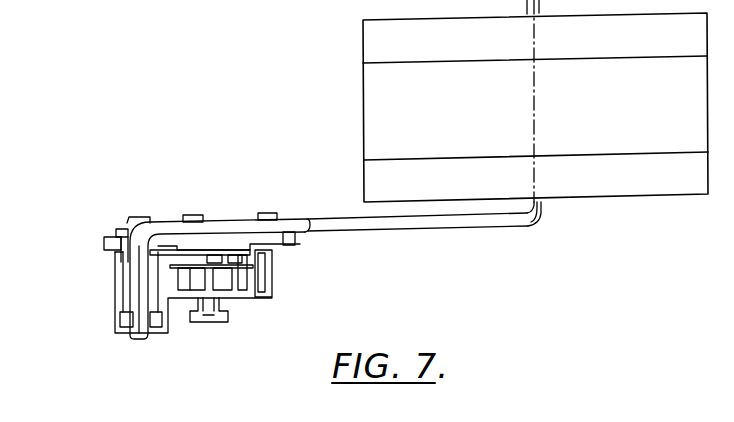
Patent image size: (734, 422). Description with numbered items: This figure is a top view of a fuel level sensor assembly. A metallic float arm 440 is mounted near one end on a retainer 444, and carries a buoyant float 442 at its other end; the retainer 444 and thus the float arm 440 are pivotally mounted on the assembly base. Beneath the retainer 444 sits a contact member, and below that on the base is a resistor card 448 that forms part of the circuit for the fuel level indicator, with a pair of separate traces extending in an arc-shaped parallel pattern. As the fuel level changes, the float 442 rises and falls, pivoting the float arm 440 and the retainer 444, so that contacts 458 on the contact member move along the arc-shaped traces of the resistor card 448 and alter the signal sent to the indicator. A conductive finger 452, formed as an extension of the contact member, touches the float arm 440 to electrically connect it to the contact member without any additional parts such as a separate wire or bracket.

The float arm 440 is at (366, 231).
The float 442 is at (377, 101).
The retainer 444 is at (283, 245).
The resistor card 448 is at (233, 287).
The conductive finger 452 is at (118, 229).
The contacts 458 is at (238, 258).